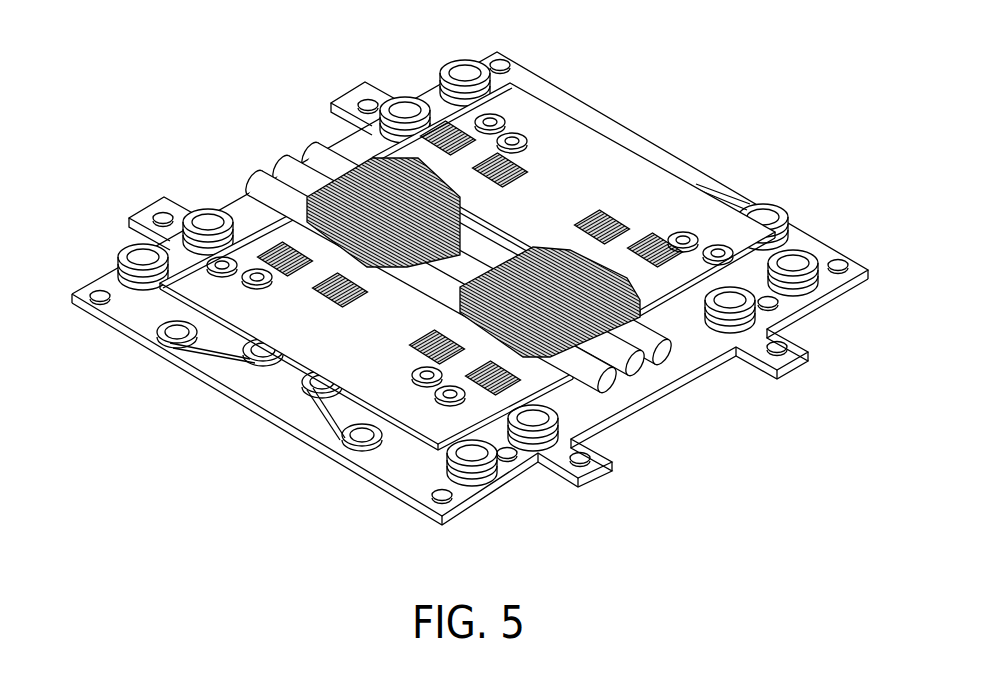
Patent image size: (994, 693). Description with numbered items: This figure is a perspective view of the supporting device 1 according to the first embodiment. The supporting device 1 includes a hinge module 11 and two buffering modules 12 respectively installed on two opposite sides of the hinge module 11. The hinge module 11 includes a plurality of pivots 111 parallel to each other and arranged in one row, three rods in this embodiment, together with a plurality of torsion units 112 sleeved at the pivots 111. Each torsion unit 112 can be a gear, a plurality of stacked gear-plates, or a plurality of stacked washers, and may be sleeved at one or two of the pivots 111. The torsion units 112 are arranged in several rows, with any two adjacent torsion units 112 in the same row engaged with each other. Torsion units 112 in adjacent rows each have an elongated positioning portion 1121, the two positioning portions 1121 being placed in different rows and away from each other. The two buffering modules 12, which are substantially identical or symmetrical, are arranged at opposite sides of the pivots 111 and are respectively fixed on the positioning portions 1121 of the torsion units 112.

The supporting device 1 is at (468, 275).
The hinge module 11 is at (462, 309).
The buffering module 12 is at (102, 279).
The pivot 111 is at (662, 362).
The torsion unit 112 is at (583, 262).
The positioning portion 1121 is at (637, 244).